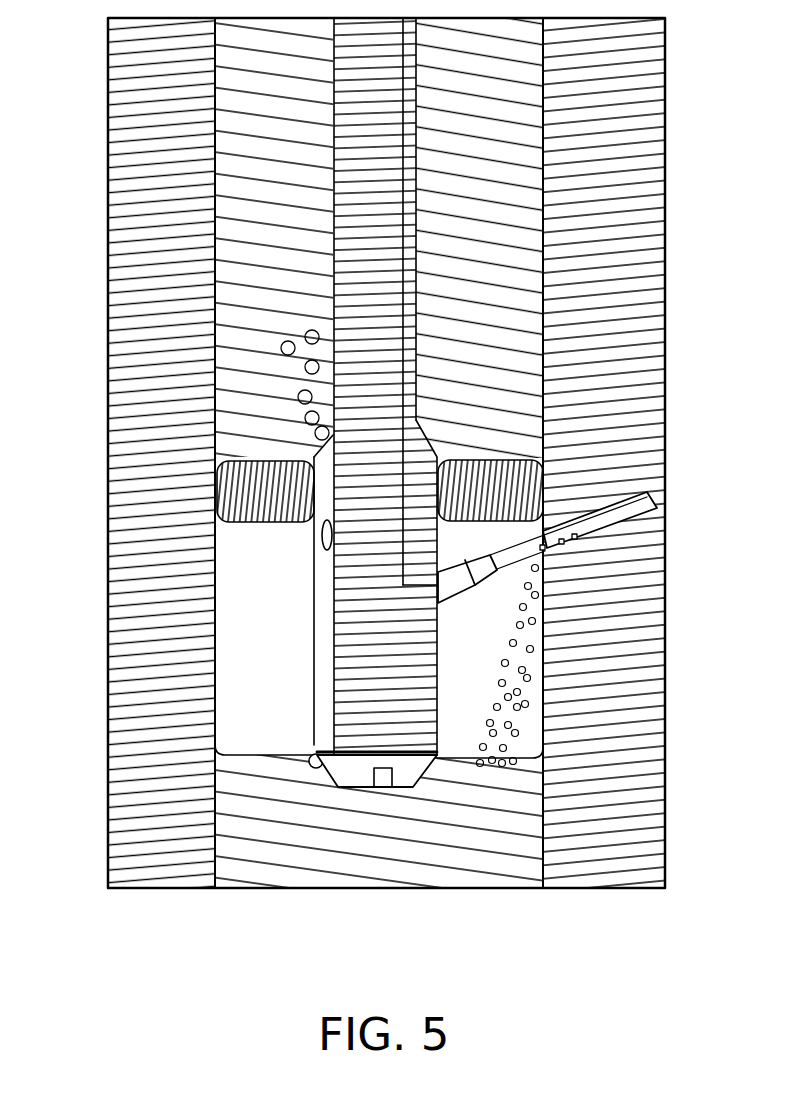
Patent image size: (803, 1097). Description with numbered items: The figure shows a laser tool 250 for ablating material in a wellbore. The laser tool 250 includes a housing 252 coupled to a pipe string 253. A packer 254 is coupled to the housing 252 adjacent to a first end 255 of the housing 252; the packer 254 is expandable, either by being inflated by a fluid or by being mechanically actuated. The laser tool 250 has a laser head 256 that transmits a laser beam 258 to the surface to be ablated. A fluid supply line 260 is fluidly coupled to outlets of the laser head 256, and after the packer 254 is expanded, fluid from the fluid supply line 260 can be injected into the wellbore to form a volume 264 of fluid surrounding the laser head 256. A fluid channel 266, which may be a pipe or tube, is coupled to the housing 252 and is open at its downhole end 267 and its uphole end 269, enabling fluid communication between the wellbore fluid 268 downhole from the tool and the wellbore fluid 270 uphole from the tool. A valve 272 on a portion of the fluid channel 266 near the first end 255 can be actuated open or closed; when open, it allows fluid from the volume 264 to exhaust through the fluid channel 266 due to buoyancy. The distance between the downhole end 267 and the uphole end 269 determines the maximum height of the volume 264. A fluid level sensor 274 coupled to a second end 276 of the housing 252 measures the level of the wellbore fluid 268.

The laser tool 250 is at (437, 428).
The housing 252 is at (427, 665).
The pipe string 253 is at (383, 230).
The packer 254 is at (543, 488).
The first end 255 is at (438, 455).
The laser head 256 is at (452, 585).
The laser beam 258 is at (607, 522).
The fluid supply line 260 is at (405, 286).
The volume 264 is at (250, 643).
The fluid channel 266 is at (305, 747).
The downhole end 267 is at (326, 776).
The wellbore fluid 268 is at (418, 800).
The uphole end 269 is at (215, 435).
The wellbore fluid 270 is at (286, 241).
The valve 272 is at (306, 538).
The fluid level sensor 274 is at (397, 780).
The second end 276 is at (422, 738).